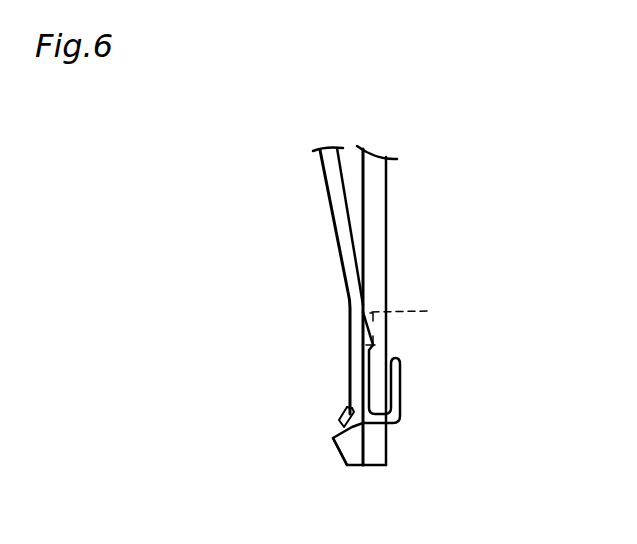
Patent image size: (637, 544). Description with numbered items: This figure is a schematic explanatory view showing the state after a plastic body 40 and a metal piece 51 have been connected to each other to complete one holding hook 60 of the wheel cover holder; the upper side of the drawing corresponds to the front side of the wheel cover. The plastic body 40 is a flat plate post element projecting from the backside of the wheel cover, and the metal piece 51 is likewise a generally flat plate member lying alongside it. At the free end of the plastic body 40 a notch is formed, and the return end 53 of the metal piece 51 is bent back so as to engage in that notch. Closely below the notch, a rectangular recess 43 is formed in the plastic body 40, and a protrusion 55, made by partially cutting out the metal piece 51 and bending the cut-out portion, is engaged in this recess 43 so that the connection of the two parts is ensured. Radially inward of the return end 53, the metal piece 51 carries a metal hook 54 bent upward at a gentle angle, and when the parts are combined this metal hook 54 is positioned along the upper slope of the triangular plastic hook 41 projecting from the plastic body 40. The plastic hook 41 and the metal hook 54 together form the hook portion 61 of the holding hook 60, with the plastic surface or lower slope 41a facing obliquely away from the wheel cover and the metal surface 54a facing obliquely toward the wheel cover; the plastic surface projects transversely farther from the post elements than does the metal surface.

The plastic body 40 is at (375, 250).
The triangular plastic hook 41 is at (345, 434).
The slope 41a is at (338, 464).
The rectangular recess 43 is at (418, 315).
The metal piece 51 is at (347, 272).
The return end 53 is at (391, 397).
The metal hook 54 is at (337, 421).
The metal surface 54a is at (347, 407).
The protrusion 55 is at (376, 329).
The holding hook 60 is at (487, 137).
The hook portion 61 is at (243, 397).